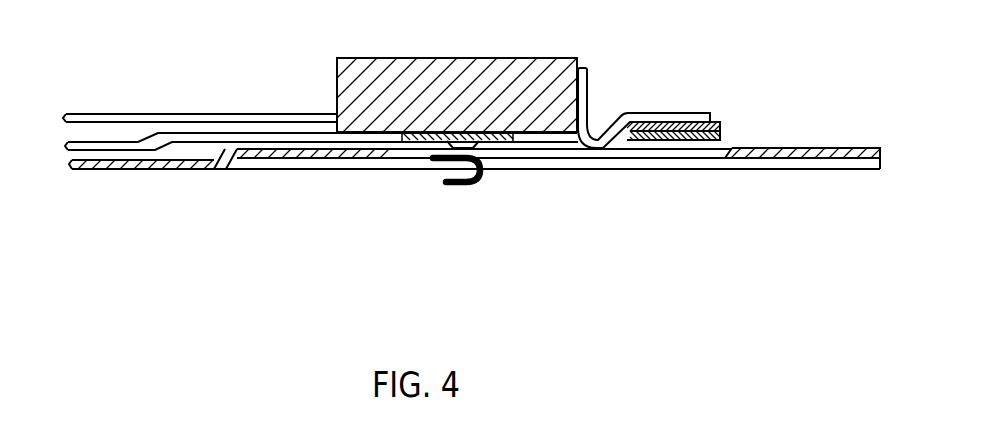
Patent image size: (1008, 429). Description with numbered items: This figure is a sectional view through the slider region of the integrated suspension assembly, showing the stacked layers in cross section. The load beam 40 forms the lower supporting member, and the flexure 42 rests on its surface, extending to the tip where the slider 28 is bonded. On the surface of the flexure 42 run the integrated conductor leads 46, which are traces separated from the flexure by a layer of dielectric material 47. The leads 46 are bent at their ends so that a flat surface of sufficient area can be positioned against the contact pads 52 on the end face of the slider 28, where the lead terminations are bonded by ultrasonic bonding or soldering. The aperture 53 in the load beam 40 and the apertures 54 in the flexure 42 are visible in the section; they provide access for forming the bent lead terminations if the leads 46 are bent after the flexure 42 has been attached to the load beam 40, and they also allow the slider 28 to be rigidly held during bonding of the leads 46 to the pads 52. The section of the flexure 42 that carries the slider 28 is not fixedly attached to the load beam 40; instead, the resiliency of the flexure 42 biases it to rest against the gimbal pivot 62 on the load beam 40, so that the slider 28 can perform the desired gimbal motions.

The slider 28 is at (462, 107).
The load beam 40 is at (215, 171).
The flexure 42 is at (137, 145).
The conductor leads 46 is at (92, 114).
The dielectric material 47 is at (720, 124).
The contact pads 52 is at (577, 58).
The aperture in the load beam 53 is at (722, 148).
The apertures in the flexure 54 is at (547, 138).
The gimbal pivot 62 is at (433, 158).